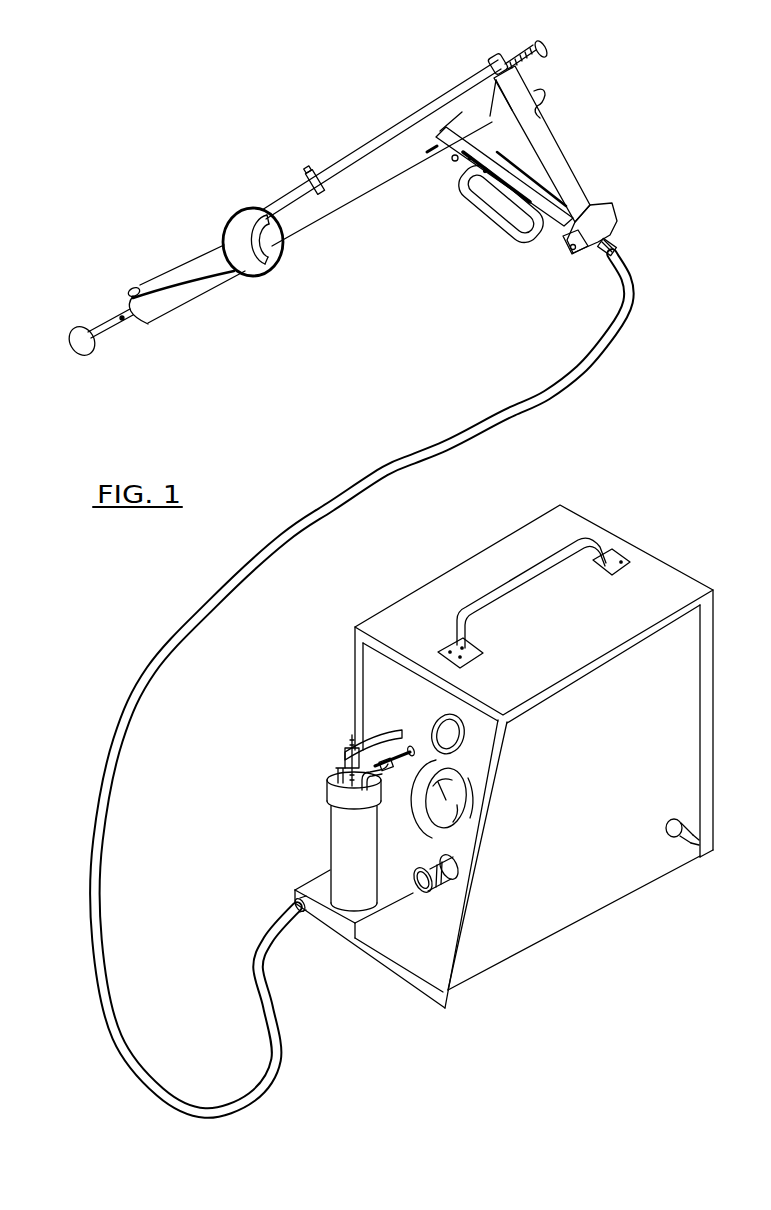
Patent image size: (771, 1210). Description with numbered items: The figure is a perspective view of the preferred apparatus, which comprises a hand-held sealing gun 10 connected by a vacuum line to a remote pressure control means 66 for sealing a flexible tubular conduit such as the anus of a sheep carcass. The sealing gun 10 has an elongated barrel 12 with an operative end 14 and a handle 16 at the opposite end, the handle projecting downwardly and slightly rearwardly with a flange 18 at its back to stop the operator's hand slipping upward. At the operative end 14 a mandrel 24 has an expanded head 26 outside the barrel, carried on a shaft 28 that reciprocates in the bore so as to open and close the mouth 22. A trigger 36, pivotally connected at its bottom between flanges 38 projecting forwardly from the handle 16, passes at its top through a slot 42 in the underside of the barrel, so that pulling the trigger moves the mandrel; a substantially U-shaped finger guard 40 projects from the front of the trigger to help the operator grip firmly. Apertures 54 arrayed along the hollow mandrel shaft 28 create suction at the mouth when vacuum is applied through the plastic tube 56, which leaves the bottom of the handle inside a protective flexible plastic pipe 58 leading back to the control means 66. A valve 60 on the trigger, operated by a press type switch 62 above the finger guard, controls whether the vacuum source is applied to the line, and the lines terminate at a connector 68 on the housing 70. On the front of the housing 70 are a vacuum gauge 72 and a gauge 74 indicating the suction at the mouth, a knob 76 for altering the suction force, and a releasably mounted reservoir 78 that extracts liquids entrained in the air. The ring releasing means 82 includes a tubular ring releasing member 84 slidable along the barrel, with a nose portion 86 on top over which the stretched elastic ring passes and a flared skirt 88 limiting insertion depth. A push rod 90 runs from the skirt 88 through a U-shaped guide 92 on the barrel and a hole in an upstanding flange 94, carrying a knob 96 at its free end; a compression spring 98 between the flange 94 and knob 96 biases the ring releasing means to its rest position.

The sealing gun 10 is at (277, 121).
The barrel 12 is at (177, 307).
The operative end 14 is at (147, 323).
The handle 16 is at (560, 157).
The flange 18 is at (545, 88).
The mouth 22 is at (100, 316).
The mandrel 24 is at (70, 316).
The expanded head 26 is at (68, 347).
The shaft 28 is at (100, 340).
The trigger 36 is at (518, 217).
The flanges 38 is at (567, 255).
The finger guard 40 is at (485, 210).
The slot 42 is at (432, 158).
The apertures 54 is at (122, 314).
The plastic tube 56 is at (540, 190).
The protective flexible plastic pipe 58 is at (413, 453).
The valve 60 is at (493, 160).
The press type switch 62 is at (453, 162).
The remote pressure control means 66 is at (645, 510).
The connector 68 is at (678, 842).
The housing 70 is at (387, 607).
The vacuum gauge 72 is at (437, 713).
The gauge 74 is at (467, 823).
The knob 76 is at (425, 898).
The reservoir 78 is at (328, 837).
The ring releasing means 82 is at (232, 203).
The ring releasing member 84 is at (205, 252).
The nose portion 86 is at (133, 287).
The flared skirt 88 is at (272, 272).
The push rod 90 is at (383, 137).
The U-shaped guide 92 is at (314, 172).
The flange 94 is at (496, 56).
The knob 96 is at (547, 42).
The compression spring 98 is at (520, 50).